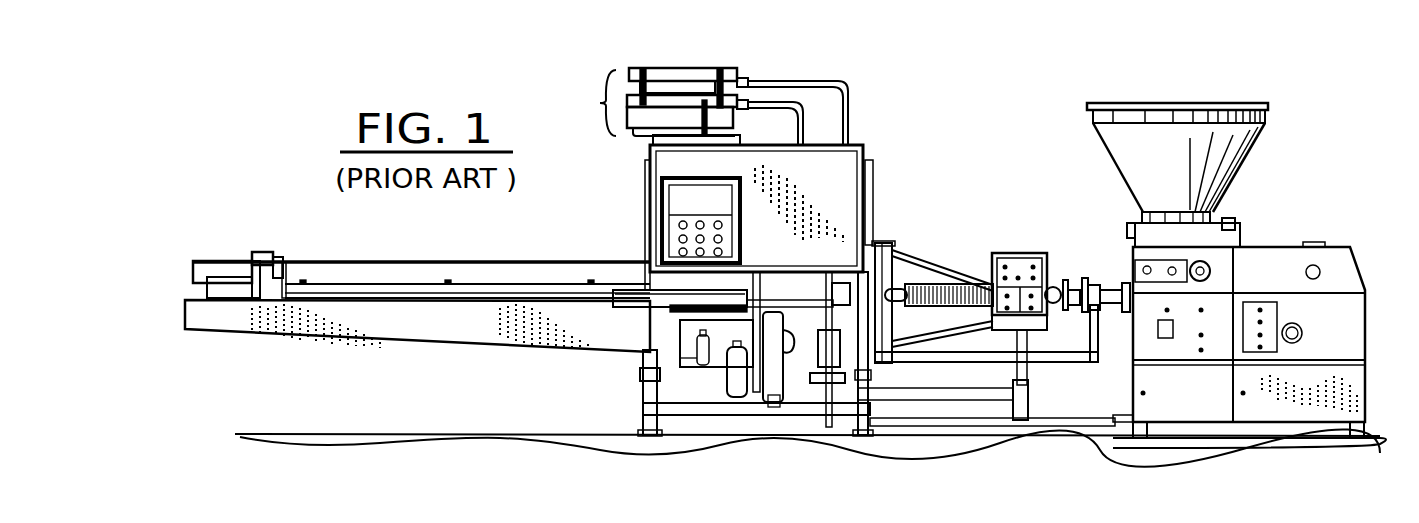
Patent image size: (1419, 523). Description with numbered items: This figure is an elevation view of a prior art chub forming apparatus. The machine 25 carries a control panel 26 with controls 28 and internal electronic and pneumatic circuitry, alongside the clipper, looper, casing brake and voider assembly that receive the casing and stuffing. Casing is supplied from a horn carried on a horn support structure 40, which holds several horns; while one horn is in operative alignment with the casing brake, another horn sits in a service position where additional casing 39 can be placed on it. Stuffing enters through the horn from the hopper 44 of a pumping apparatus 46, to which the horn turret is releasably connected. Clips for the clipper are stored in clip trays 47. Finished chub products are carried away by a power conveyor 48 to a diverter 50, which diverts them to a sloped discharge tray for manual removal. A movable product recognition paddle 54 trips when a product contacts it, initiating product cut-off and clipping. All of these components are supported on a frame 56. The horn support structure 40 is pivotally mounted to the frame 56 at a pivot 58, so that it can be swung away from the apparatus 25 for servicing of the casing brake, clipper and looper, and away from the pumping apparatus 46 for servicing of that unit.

The apparatus 25 is at (885, 122).
The control panel 26 is at (843, 197).
The controls 28 is at (683, 226).
The casing 39 is at (930, 283).
The horn support structure 40 is at (1054, 287).
The hopper 44 is at (1227, 160).
The pumping apparatus 46 is at (1338, 328).
The clip trays 47 is at (654, 106).
The power conveyor 48 is at (360, 288).
The diverter 50 is at (246, 290).
The product recognition paddle 54 is at (273, 253).
The frame 56 is at (641, 373).
The pivot 58 is at (885, 243).